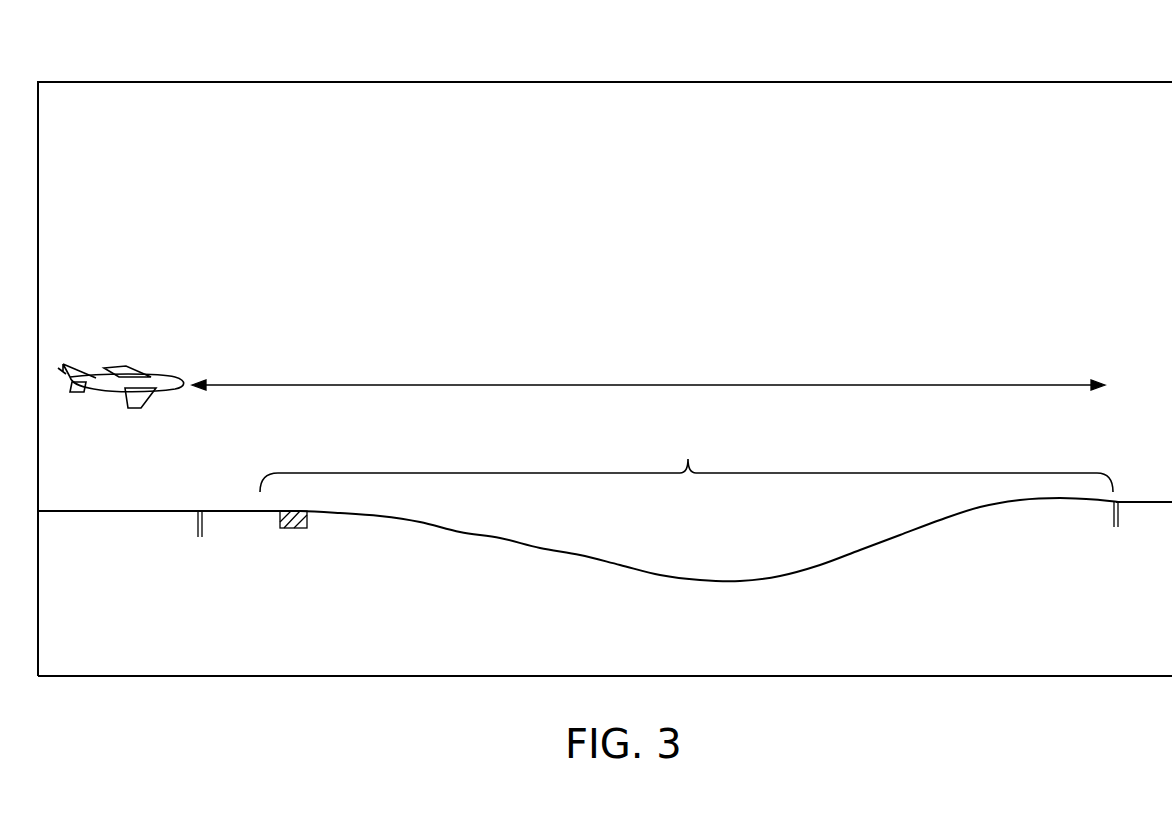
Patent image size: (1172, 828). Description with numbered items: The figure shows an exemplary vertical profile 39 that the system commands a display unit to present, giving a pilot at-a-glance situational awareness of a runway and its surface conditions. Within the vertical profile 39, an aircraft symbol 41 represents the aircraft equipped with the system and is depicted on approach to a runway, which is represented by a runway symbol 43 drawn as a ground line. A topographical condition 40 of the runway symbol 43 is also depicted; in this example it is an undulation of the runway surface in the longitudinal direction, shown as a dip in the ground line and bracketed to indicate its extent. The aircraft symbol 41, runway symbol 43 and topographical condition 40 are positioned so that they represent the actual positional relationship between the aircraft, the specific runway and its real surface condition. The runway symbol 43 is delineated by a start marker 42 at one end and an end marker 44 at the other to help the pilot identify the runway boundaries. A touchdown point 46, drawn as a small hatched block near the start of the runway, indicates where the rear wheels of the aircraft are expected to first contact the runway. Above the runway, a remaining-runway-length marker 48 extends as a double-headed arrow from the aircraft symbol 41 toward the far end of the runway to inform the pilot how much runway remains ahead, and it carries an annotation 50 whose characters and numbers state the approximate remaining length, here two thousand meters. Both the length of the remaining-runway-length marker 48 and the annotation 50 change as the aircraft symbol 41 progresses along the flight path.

The vertical profile 39 is at (499, 80).
The topographical condition 40 is at (689, 503).
The aircraft symbol 41 is at (148, 376).
The start marker 42 is at (196, 528).
The runway symbol 43 is at (233, 510).
The end marker 44 is at (1112, 516).
The touchdown point 46 is at (298, 530).
The remaining-runway-length marker 48 is at (363, 383).
The annotation 50 is at (640, 350).